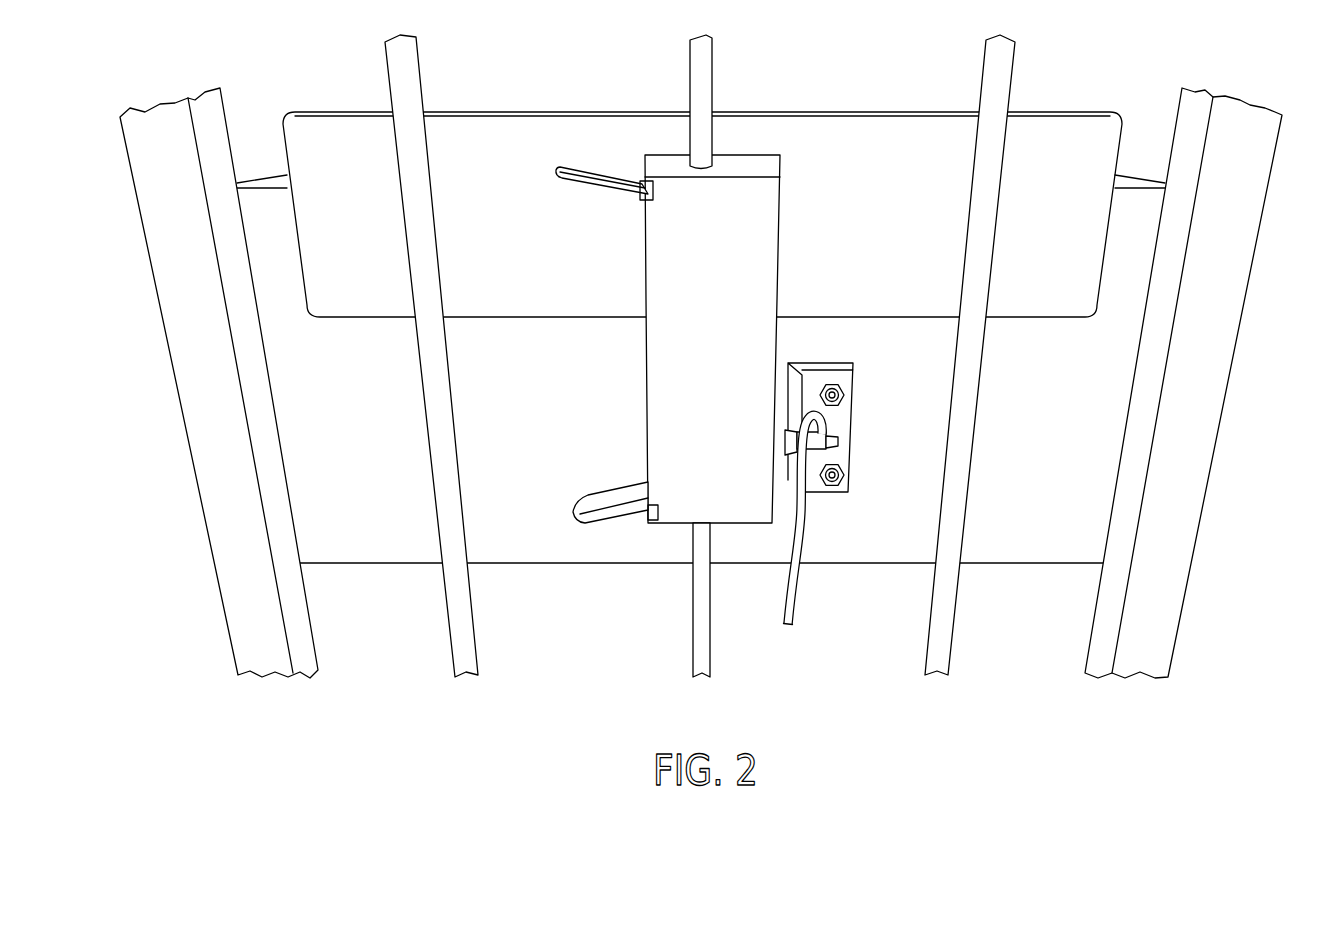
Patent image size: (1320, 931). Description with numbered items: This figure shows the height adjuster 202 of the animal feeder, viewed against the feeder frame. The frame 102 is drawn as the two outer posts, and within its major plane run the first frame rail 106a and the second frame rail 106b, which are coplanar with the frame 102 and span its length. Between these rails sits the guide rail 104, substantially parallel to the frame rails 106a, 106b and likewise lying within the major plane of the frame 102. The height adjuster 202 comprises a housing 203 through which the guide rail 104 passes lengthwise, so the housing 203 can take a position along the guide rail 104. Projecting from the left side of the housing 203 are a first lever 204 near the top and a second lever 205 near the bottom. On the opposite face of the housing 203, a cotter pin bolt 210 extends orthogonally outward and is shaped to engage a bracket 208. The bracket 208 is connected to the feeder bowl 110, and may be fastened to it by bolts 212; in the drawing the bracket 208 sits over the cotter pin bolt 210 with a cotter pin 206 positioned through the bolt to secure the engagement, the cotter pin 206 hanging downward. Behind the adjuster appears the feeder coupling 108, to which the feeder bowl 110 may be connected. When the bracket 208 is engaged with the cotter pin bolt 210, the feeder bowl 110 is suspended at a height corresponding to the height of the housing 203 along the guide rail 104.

The frame 102 is at (1200, 492).
The guide rail 104 is at (690, 65).
The first frame rail 106a is at (405, 183).
The second frame rail 106b is at (1012, 68).
The feeder coupling 108 is at (853, 122).
The feeder bowl 110 is at (387, 556).
The height adjuster 202 is at (714, 339).
The housing 203 is at (772, 226).
The first lever 204 is at (570, 165).
The second lever 205 is at (590, 500).
The cotter pin 206 is at (812, 520).
The bracket 208 is at (853, 368).
The cotter pin bolt 210 is at (845, 441).
The nuts 212 is at (852, 396).